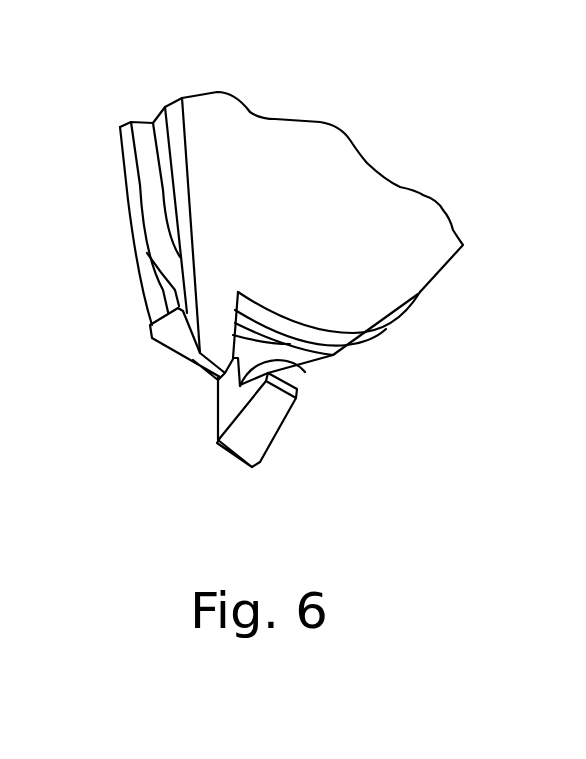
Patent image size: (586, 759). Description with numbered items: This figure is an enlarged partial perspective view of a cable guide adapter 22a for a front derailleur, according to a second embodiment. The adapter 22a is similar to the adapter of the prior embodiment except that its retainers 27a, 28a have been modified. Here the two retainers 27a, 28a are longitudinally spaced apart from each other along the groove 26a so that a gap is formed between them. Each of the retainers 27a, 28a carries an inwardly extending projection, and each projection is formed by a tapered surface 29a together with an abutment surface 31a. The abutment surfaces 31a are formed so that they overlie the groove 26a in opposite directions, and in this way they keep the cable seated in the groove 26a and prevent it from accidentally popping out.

The cable guide adapter 22a is at (290, 103).
The groove 26a is at (162, 152).
The retainer 27a is at (178, 372).
The retainer 28a is at (274, 474).
The tapered surface 29a is at (165, 345).
The abutment surface 31a is at (155, 305).